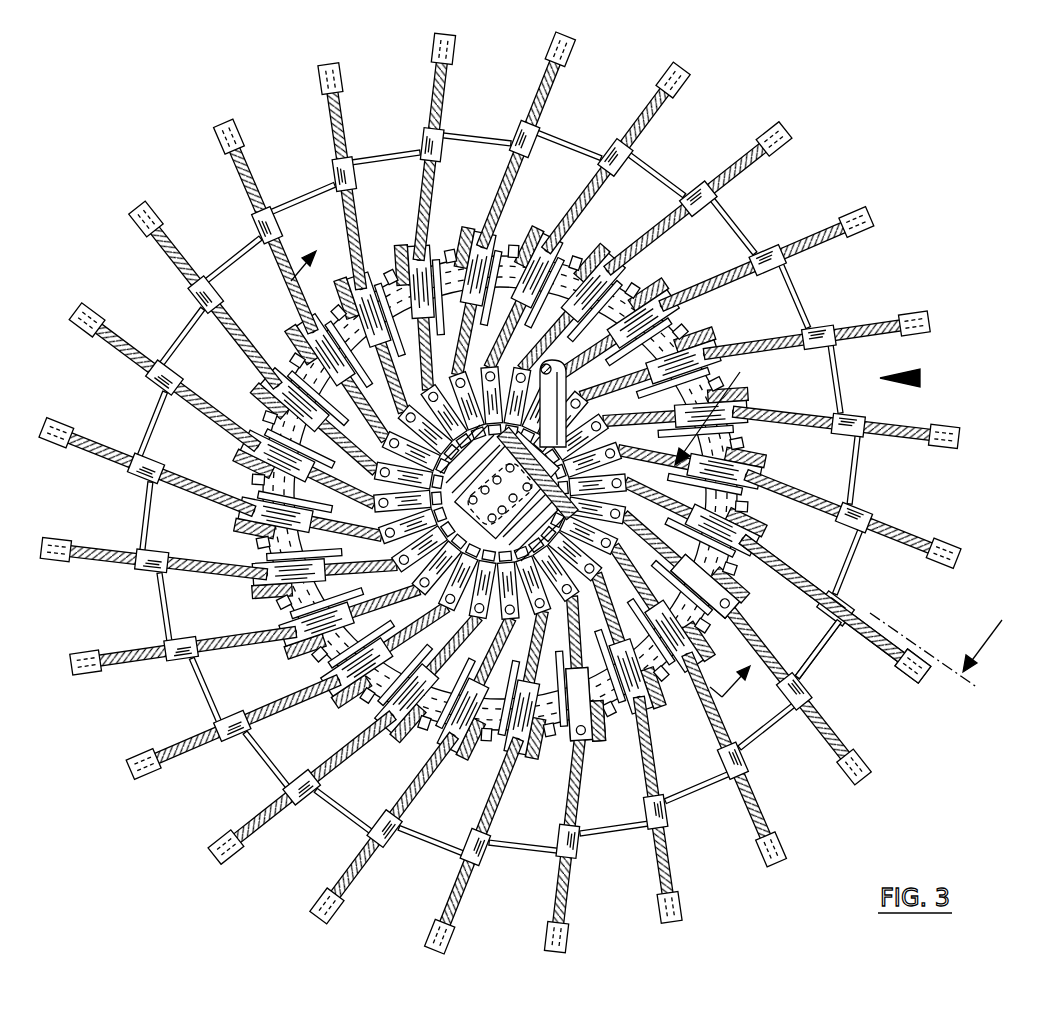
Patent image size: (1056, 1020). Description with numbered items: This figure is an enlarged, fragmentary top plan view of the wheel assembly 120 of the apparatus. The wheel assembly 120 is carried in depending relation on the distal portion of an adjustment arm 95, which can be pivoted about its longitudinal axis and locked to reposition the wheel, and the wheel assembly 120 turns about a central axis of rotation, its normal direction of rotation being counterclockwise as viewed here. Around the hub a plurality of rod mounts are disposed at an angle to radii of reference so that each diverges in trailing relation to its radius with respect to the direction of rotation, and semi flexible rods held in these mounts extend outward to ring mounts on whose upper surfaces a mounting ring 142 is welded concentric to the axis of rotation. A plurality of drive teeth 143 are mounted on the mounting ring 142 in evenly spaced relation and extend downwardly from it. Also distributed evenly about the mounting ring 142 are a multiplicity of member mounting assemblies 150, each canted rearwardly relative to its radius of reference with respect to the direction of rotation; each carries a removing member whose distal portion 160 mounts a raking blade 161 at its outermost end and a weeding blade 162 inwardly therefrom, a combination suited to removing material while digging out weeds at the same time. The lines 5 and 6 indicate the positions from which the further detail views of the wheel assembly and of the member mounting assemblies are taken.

The section line 5- 5 is at (529, 464).
The section line 6- 6 is at (847, 521).
The adjustment arm 95 is at (557, 383).
The wheel assembly 120 is at (920, 380).
The mounting ring 142 is at (562, 733).
The drive teeth 143 is at (404, 252).
The member mounting assemblies 150 is at (722, 588).
The distal portion 160 is at (890, 647).
The raking blade 161 is at (908, 668).
The weeding blade 162 is at (818, 658).